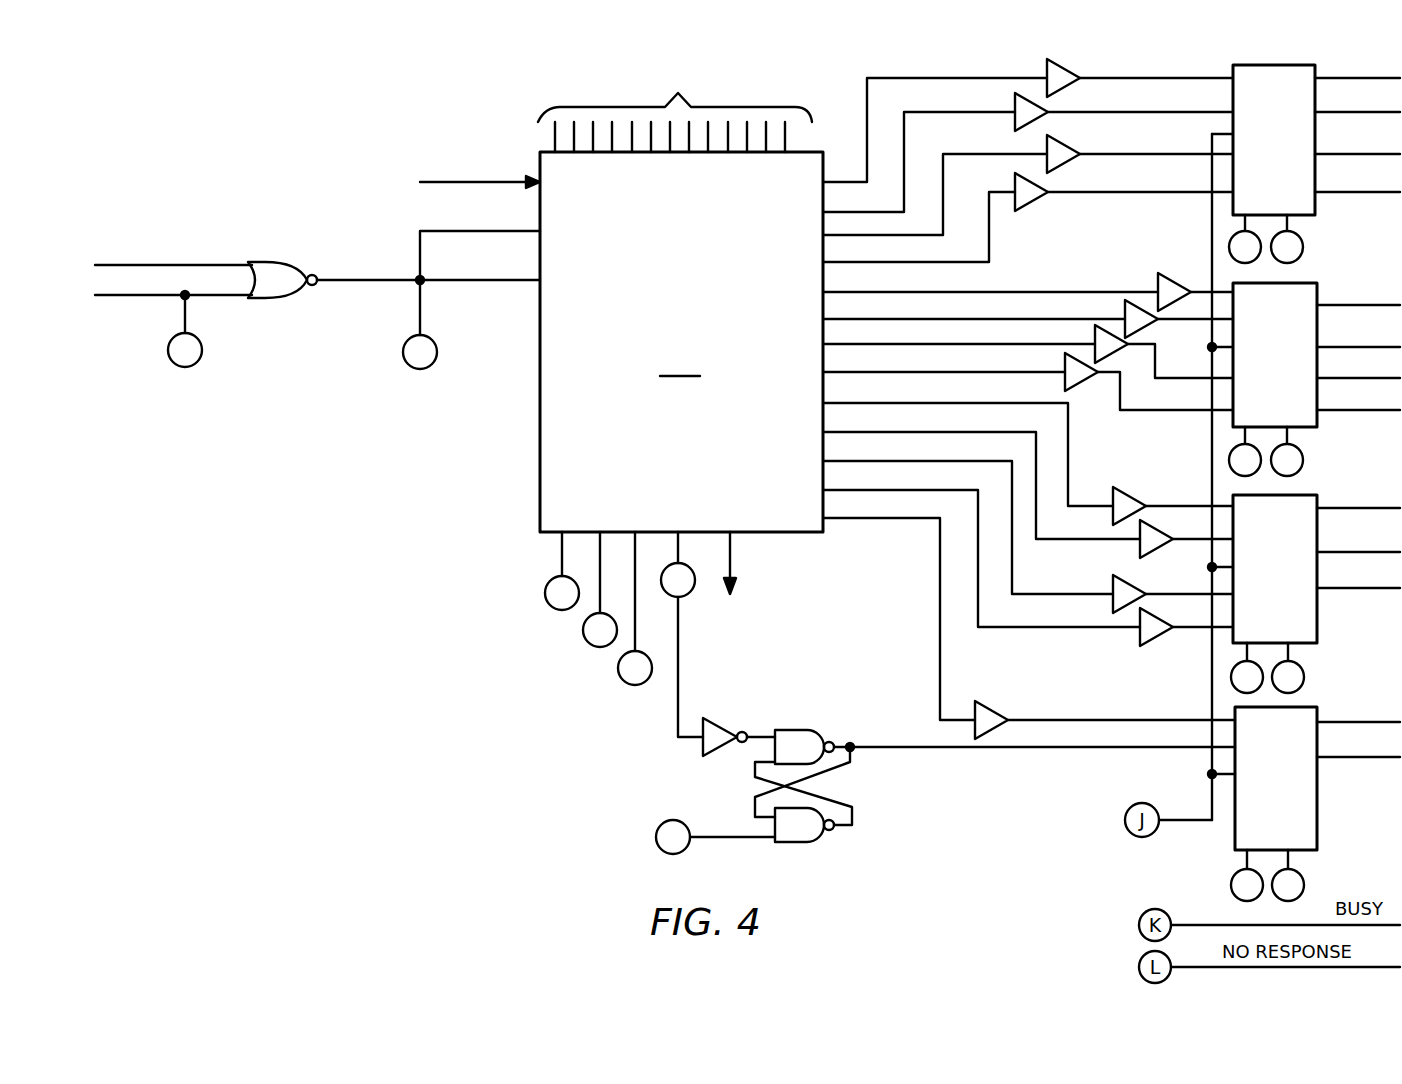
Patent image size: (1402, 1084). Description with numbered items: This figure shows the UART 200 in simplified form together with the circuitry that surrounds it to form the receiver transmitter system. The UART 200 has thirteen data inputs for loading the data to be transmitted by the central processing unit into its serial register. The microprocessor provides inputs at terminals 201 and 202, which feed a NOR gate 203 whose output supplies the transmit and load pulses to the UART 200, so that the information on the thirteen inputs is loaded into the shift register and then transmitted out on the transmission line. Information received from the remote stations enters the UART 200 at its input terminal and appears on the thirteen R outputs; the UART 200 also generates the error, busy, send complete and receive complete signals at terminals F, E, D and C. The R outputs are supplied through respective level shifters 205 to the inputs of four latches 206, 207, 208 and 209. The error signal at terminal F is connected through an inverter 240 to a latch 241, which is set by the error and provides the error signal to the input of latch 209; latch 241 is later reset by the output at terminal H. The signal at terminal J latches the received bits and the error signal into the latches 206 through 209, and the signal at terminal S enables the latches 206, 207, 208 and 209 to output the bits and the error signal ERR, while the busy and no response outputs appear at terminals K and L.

The UART 200 is at (625, 376).
The terminal 201 is at (153, 265).
The terminal 202 is at (160, 297).
The NOR gate 203 is at (275, 258).
The level shifters 205 is at (1075, 88).
The latch 206 is at (1295, 176).
The latch 207 is at (1297, 385).
The latch 208 is at (1297, 604).
The latch 209 is at (1297, 809).
The inverter 240 is at (724, 720).
The latch 241 is at (830, 733).